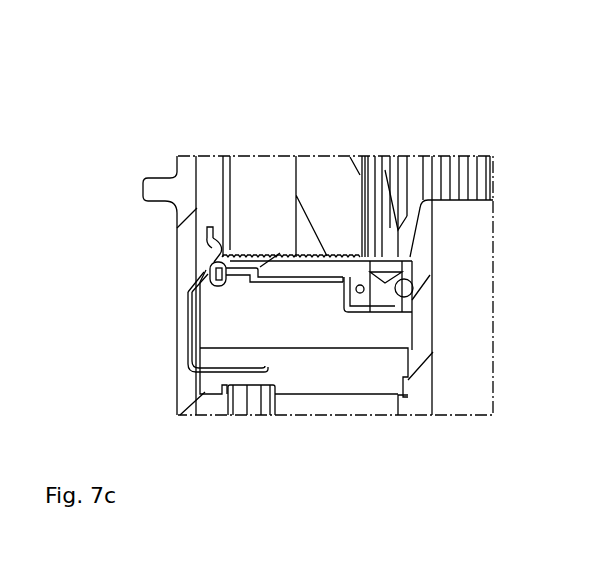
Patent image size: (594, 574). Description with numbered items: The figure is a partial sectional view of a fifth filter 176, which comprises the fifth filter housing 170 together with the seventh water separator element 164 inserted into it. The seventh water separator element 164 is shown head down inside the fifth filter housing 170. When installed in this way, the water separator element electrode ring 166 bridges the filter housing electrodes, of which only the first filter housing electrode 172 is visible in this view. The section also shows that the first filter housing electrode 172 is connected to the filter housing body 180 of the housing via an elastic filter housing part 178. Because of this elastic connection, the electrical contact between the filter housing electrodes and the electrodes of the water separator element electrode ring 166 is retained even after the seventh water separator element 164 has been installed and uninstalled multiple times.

The seventh water separator element 164 is at (504, 197).
The water separator element electrode ring 166 is at (207, 284).
The fifth filter housing 170 is at (166, 313).
The first filter housing electrode 172 is at (209, 238).
The fifth filter 176 is at (430, 130).
The elastic filter housing part 178 is at (205, 279).
The filter housing body 180 is at (190, 380).